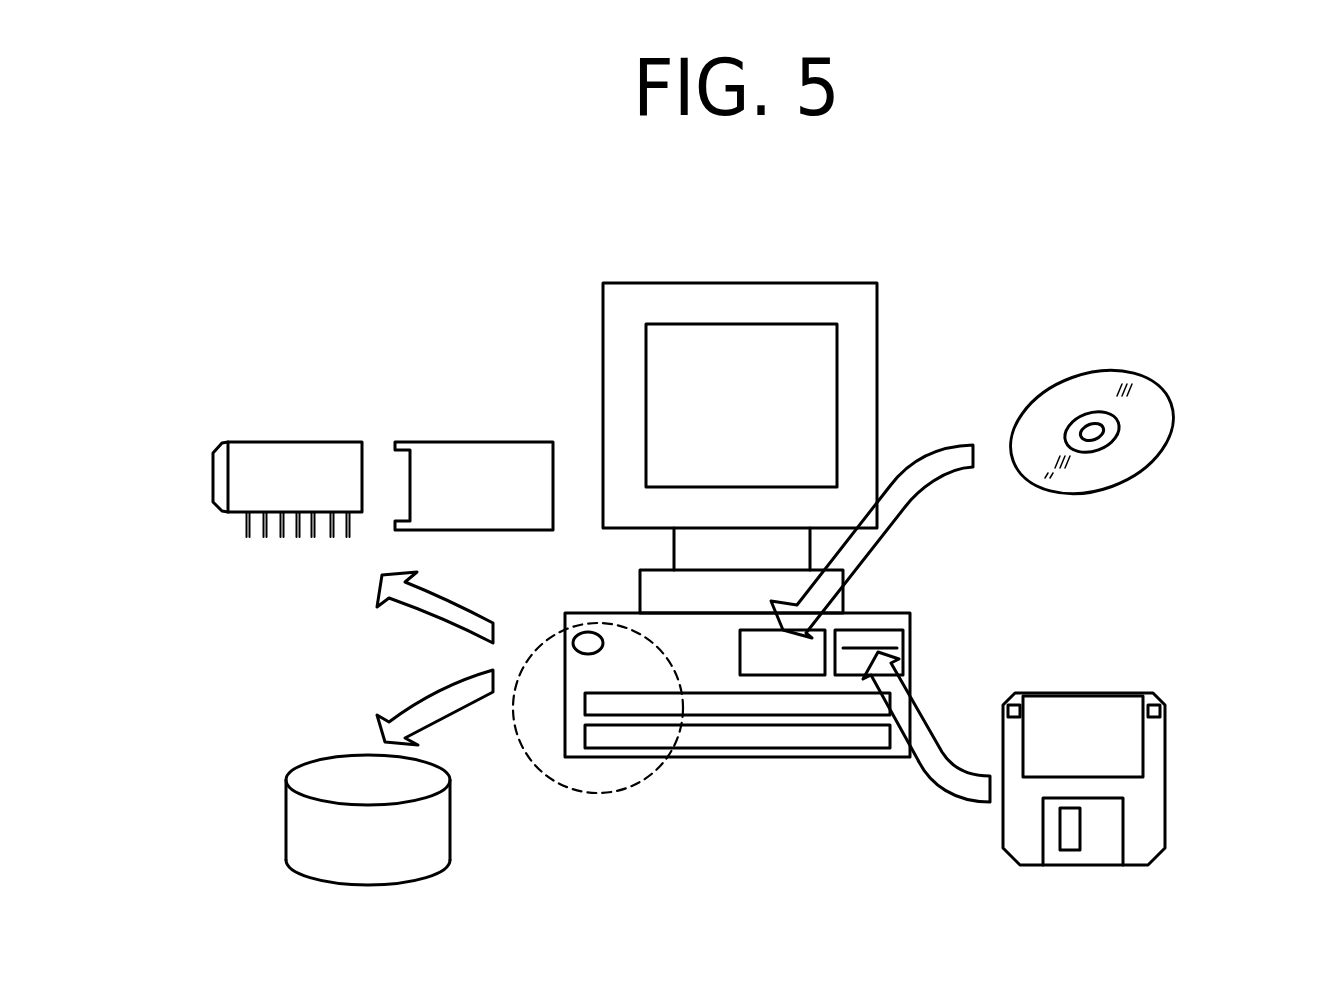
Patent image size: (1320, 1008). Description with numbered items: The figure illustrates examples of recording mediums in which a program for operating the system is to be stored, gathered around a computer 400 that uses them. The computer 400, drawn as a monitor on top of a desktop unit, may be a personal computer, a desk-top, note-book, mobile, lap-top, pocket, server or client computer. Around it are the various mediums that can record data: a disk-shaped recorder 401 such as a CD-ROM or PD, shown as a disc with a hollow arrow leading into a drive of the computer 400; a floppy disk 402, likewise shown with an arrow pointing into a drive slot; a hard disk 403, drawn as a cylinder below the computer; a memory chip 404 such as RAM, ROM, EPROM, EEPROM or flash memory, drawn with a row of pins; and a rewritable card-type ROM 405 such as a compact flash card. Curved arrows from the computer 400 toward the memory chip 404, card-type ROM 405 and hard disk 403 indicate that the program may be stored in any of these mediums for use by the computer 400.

The computer 400 is at (877, 317).
The disk-shaped recorder 401 is at (1163, 382).
The floppy disk 402 is at (1167, 713).
The hard disk 403 is at (286, 840).
The memory chip 404 is at (255, 442).
The rewritable card-type ROM 405 is at (435, 442).